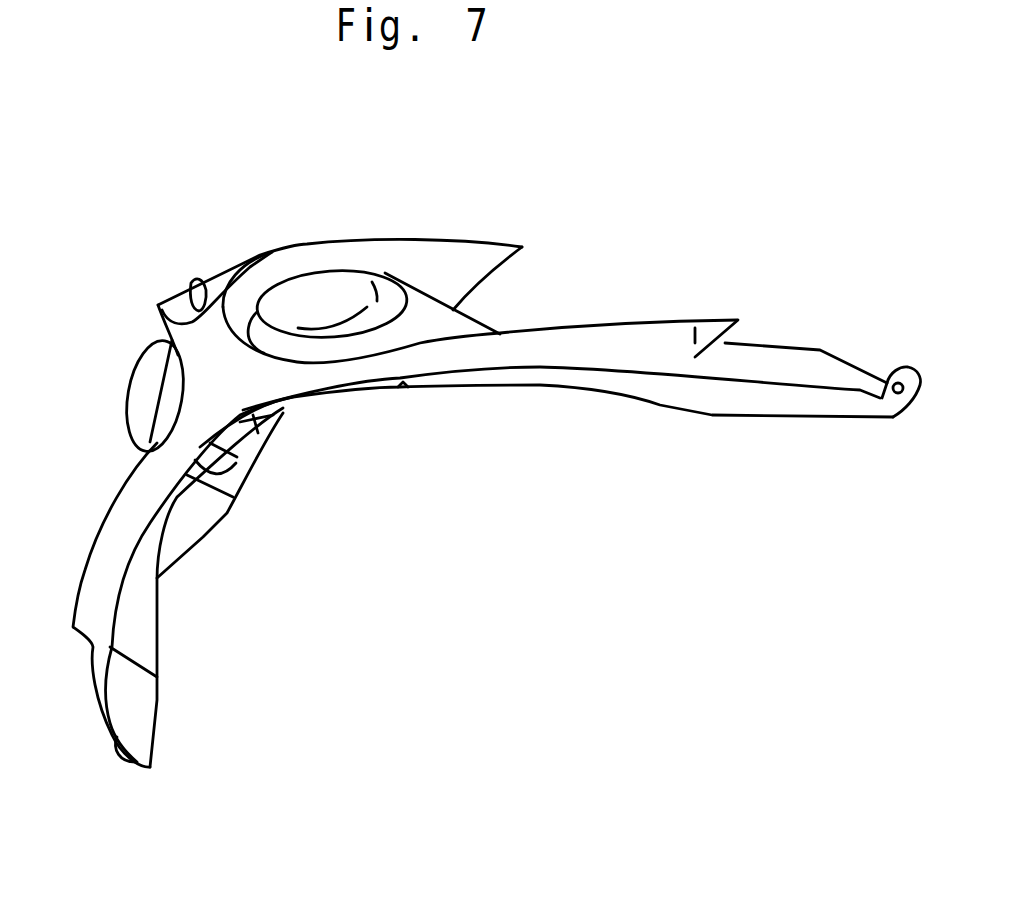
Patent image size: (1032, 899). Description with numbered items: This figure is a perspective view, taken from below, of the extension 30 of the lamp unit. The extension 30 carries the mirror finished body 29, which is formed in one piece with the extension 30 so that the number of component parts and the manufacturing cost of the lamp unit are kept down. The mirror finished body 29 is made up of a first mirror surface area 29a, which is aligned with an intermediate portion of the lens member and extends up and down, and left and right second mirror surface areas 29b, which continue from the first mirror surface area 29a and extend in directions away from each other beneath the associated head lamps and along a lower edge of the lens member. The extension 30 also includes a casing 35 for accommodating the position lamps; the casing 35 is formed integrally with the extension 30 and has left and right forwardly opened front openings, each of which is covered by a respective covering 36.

The mirror finished body 29 is at (497, 543).
The first mirror surface area 29a is at (226, 376).
The second mirror surface areas 29b is at (553, 355).
The extension 30 is at (488, 240).
The casing 35 is at (443, 327).
The coverings 36 is at (150, 365).